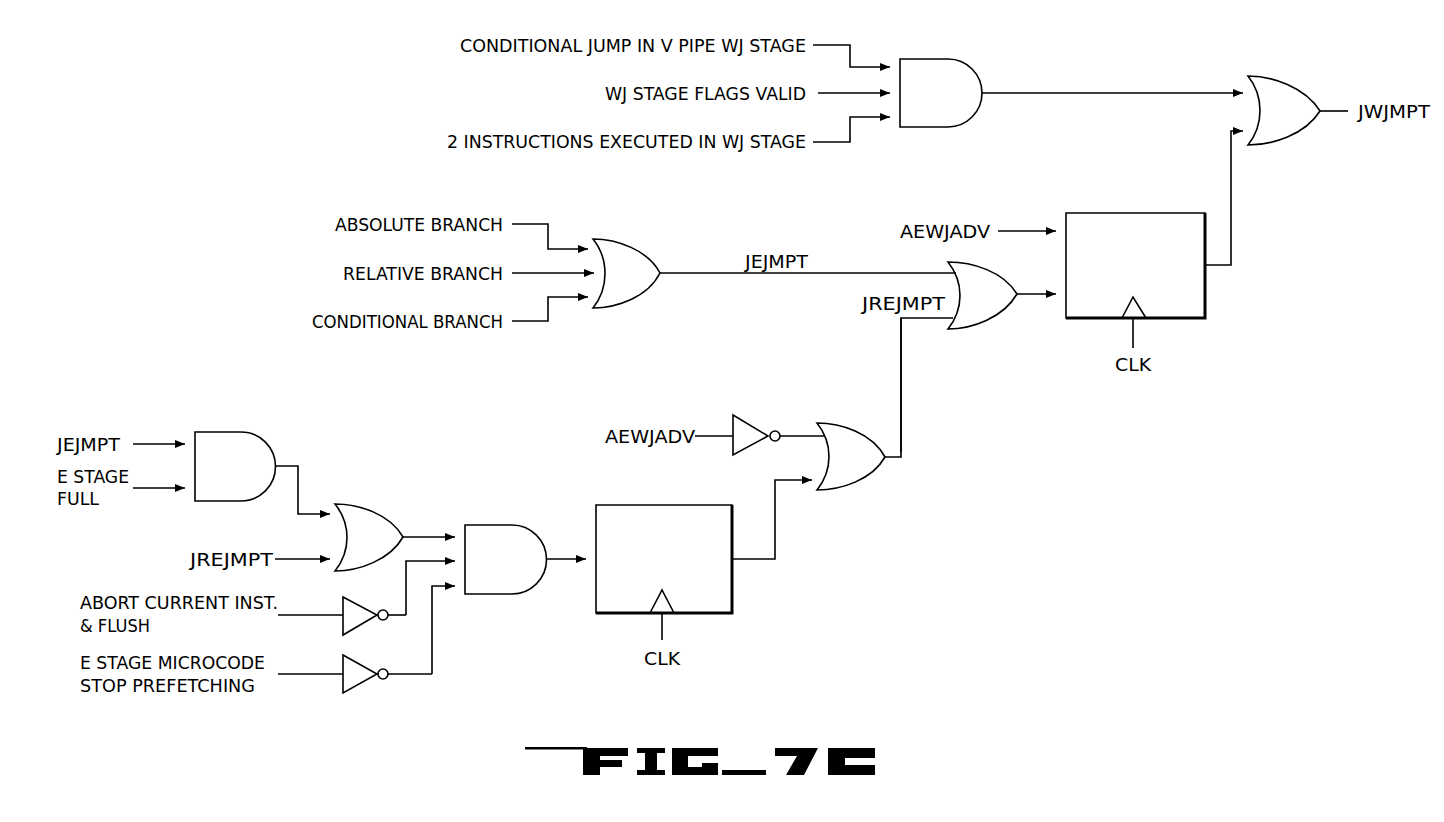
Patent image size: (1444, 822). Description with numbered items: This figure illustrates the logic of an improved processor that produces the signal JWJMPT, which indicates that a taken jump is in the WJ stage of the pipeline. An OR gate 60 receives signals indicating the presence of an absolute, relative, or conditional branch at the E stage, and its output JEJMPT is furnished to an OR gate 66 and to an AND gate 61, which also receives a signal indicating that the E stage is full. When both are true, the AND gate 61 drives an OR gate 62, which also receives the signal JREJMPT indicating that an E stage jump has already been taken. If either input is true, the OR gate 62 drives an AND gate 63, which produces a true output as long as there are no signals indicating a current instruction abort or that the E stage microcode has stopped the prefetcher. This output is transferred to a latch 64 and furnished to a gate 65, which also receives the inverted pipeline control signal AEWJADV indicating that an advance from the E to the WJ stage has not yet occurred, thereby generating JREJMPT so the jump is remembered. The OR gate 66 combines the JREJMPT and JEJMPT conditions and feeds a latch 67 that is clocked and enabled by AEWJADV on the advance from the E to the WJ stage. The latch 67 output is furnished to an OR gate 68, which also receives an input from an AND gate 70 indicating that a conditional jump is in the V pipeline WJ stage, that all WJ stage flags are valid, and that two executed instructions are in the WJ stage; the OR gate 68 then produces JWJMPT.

The OR gate 60 is at (639, 282).
The AND gate 61 is at (243, 474).
The OR gate 62 is at (379, 544).
The AND gate 63 is at (513, 569).
The latch 64 is at (675, 561).
The AND gate 65 is at (861, 467).
The OR gate 66 is at (993, 306).
The latch 67 is at (1146, 269).
The OR gate 68 is at (1294, 122).
The AND gate 70 is at (950, 102).